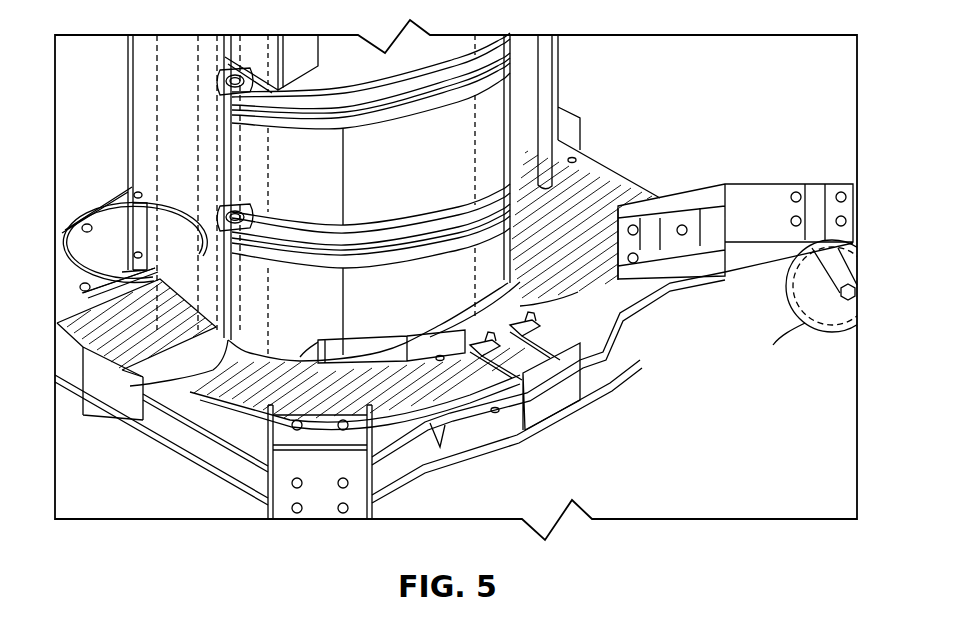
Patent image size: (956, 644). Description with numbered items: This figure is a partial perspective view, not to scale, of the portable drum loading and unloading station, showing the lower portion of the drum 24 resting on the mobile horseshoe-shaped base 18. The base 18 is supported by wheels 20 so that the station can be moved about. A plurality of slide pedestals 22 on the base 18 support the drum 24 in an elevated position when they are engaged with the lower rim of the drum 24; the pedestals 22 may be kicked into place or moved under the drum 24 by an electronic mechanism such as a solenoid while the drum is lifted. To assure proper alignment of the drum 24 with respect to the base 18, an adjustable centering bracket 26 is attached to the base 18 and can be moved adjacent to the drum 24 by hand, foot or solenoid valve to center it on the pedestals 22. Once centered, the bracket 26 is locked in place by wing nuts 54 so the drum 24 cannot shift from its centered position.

The horseshoe-shaped base 18 is at (583, 250).
The wheels 20 is at (790, 335).
The slide pedestals 22 is at (108, 400).
The drum 24 is at (418, 172).
The adjustable centering bracket 26 is at (300, 357).
The wing nuts 54 is at (470, 352).